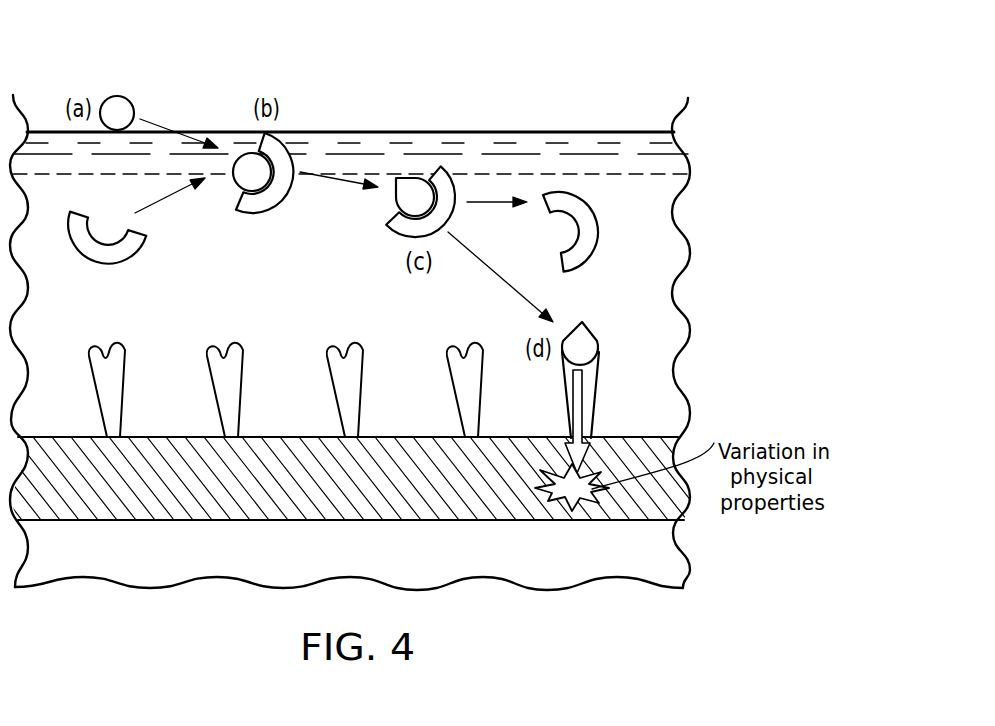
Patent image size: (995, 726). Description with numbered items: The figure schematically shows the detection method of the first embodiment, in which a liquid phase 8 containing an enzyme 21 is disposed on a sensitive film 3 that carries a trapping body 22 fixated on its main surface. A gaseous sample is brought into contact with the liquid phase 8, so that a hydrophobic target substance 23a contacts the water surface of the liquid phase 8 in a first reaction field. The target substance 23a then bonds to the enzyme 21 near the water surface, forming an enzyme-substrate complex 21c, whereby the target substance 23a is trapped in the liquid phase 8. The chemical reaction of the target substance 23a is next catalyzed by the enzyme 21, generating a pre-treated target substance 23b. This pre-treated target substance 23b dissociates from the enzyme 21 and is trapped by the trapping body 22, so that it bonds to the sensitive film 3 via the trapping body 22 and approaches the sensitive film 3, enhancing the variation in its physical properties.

The sensitive film 3 is at (425, 513).
The liquid phase 8 is at (582, 140).
The enzyme 21 is at (137, 227).
The enzyme-substrate complex 21c is at (260, 205).
The trapping body 22 is at (588, 388).
The target substance 23a is at (117, 112).
The pre-treated target substance 23b is at (413, 193).